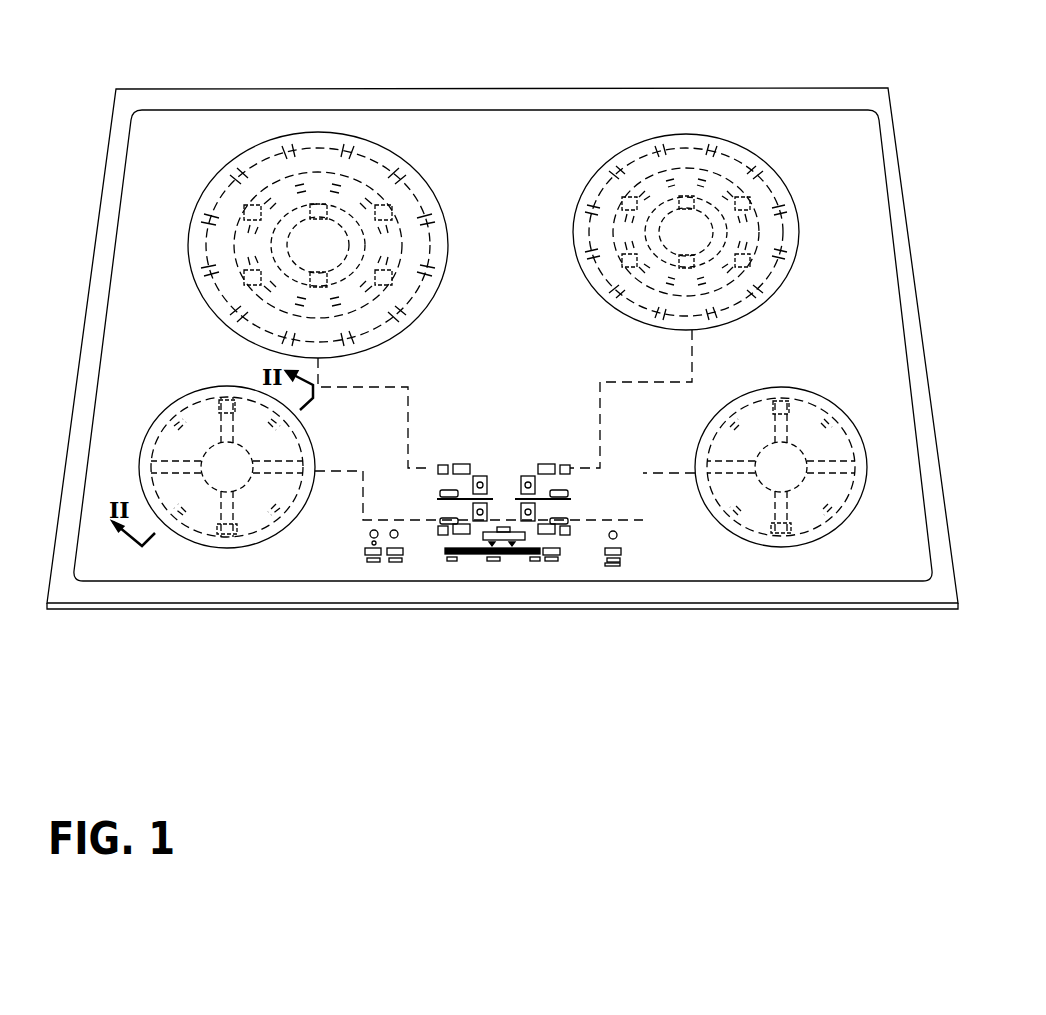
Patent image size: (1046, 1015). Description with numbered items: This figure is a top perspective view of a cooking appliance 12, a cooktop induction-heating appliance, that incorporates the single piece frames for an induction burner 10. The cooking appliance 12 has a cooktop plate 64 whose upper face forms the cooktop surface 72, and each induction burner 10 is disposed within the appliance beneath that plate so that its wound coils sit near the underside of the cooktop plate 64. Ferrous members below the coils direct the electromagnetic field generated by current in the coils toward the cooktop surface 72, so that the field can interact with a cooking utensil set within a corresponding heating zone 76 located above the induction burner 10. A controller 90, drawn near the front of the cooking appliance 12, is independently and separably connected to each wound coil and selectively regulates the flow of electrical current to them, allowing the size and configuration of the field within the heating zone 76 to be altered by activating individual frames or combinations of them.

The induction burner 10 is at (608, 158).
The cooking appliance 12 is at (793, 89).
The cooktop plate 64 is at (843, 268).
The cooktop surface 72 is at (650, 432).
The heating zone 76 is at (203, 195).
The controller 90 is at (540, 573).